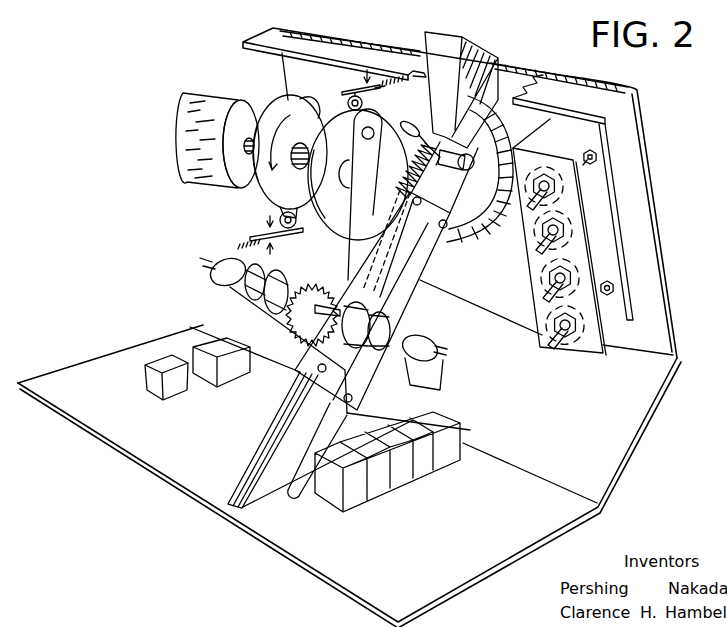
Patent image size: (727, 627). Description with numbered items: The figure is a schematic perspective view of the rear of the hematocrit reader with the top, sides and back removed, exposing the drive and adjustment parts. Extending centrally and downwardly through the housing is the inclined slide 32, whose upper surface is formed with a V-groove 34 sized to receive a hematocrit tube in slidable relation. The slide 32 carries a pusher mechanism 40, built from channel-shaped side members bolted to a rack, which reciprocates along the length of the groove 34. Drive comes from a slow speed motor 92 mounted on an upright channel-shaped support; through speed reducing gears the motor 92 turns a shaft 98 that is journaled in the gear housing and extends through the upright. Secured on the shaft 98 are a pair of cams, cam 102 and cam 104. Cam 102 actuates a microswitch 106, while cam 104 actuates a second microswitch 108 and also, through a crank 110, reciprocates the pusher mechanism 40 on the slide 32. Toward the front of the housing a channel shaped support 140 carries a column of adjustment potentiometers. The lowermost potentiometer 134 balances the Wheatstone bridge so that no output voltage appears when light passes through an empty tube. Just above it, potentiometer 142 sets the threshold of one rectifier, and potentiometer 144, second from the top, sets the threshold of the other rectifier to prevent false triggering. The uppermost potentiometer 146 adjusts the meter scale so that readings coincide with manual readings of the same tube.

The inclined slide 32 is at (276, 487).
The V-groove 34 is at (260, 460).
The pusher mechanism 40 is at (422, 264).
The slow speed motor 92 is at (190, 134).
The shaft 98 is at (301, 143).
The cam 102 is at (292, 98).
The cam 104 is at (373, 92).
The microswitch 106 is at (255, 240).
The second microswitch 108 is at (379, 88).
The crank 110 is at (362, 205).
The potentiometer 134 is at (580, 335).
The channel shaped support 140 is at (565, 107).
The potentiometer 142 is at (547, 275).
The potentiometer 144 is at (537, 230).
The potentiometer 146 is at (546, 186).